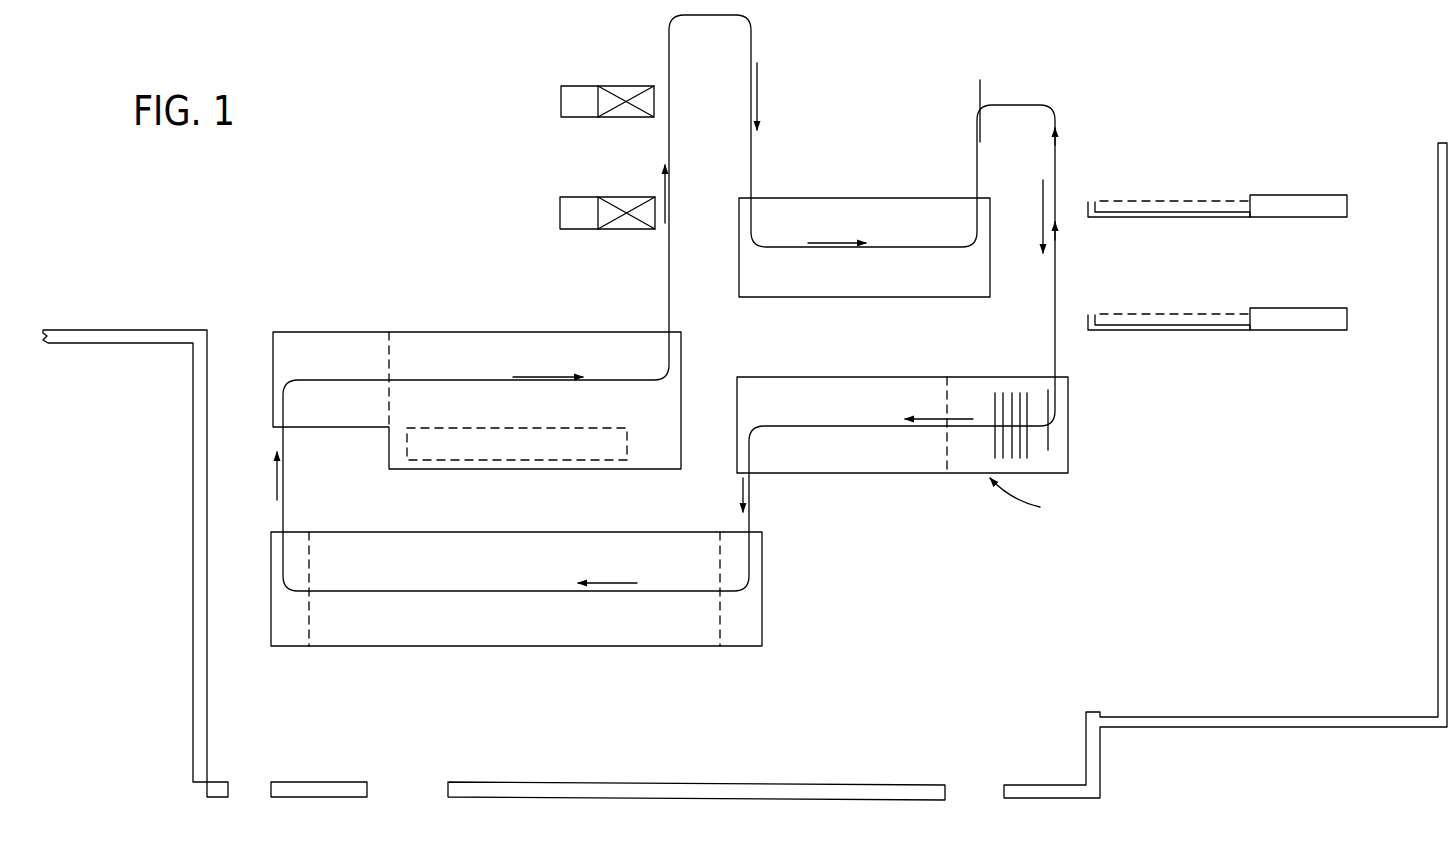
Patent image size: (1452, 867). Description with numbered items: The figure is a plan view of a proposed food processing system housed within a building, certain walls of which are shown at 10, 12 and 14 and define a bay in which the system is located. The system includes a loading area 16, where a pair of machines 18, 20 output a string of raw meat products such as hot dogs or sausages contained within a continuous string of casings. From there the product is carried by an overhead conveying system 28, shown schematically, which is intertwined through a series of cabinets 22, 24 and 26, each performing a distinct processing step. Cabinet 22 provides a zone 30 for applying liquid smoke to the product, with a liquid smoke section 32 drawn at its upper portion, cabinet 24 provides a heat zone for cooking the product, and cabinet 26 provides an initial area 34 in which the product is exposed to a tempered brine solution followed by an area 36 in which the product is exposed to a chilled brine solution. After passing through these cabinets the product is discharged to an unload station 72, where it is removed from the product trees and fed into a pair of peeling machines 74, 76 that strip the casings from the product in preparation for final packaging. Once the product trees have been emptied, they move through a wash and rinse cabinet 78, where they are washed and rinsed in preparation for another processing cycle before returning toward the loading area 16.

The wall 10 is at (1316, 727).
The wall 12 is at (647, 798).
The wall 14 is at (93, 343).
The loading area 16 is at (1115, 272).
The machine 18 is at (1233, 188).
The machine 20 is at (1285, 295).
The cabinet 22 is at (996, 443).
The cabinet 24 is at (491, 654).
The cabinet 26 is at (476, 363).
The overhead conveying system 28 is at (1068, 367).
The zone 30 is at (1003, 377).
The liquid smoke zone 32 is at (792, 377).
The initial area 34 is at (328, 332).
The area 36 is at (508, 332).
The unload station 72 is at (637, 169).
The peeling machine 74 is at (592, 80).
The peeling machine 76 is at (548, 218).
The wash and rinse cabinet 78 is at (840, 190).